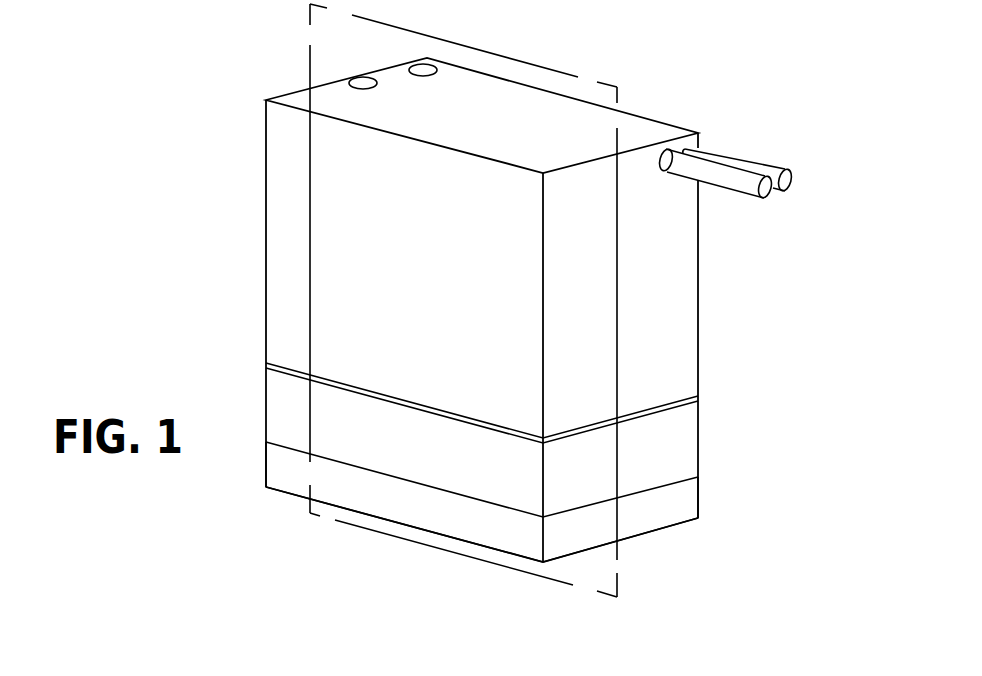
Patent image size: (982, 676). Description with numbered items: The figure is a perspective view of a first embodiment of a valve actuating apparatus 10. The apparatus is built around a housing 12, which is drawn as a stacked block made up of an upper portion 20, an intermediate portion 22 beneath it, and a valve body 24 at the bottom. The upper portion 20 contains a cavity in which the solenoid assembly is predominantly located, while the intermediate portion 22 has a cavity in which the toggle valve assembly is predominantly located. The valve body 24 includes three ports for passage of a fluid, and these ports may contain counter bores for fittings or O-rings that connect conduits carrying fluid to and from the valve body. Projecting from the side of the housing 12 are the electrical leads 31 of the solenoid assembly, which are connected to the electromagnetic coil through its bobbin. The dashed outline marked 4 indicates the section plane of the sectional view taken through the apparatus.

The valve actuating apparatus 10 is at (683, 95).
The housing 12 is at (258, 202).
The upper portion 20 is at (670, 290).
The intermediate portion 22 is at (682, 442).
The valve body 24 is at (682, 492).
The electrical leads 31 is at (740, 175).
The section line 4- 4 is at (308, 257).